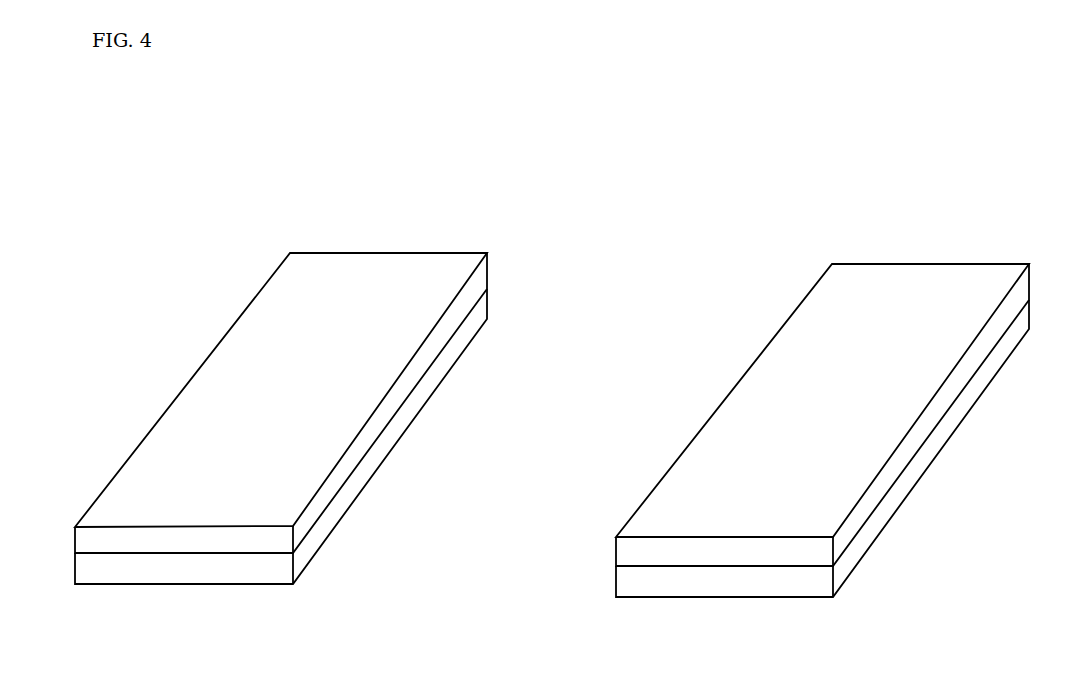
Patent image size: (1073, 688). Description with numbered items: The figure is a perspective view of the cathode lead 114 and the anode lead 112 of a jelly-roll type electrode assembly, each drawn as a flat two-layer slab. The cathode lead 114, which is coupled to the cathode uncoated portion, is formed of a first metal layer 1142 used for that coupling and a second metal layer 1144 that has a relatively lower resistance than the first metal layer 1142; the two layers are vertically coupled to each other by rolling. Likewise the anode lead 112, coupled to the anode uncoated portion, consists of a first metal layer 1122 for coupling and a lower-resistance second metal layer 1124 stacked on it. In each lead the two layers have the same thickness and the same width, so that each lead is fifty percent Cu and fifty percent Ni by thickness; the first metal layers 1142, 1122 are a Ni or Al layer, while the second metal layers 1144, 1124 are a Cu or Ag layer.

The cathode lead 114 is at (281, 358).
The second metal layer 1144 is at (433, 340).
The first metal layer 1142 is at (390, 437).
The anode lead 112 is at (822, 396).
The second metal layer 1124 is at (964, 372).
The first metal layer 1122 is at (887, 503).